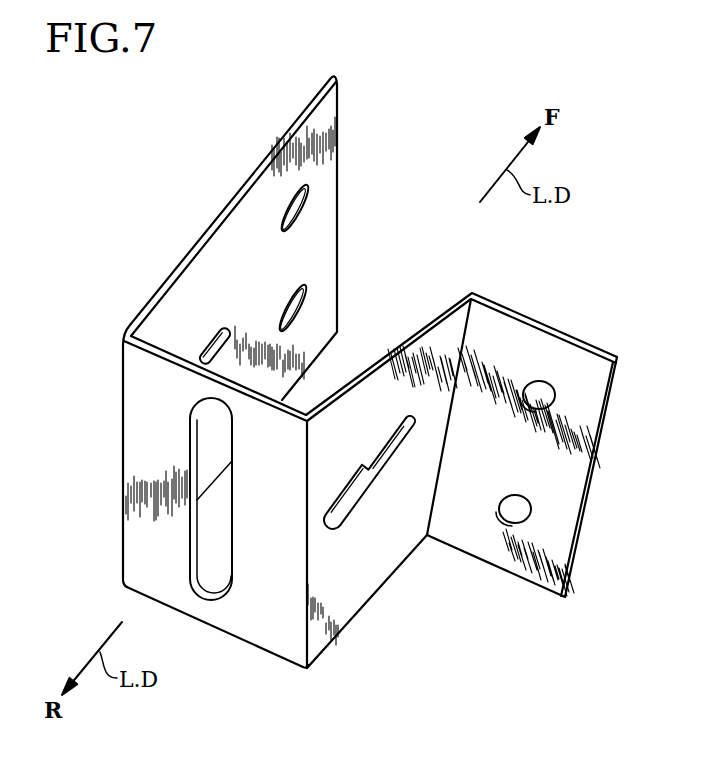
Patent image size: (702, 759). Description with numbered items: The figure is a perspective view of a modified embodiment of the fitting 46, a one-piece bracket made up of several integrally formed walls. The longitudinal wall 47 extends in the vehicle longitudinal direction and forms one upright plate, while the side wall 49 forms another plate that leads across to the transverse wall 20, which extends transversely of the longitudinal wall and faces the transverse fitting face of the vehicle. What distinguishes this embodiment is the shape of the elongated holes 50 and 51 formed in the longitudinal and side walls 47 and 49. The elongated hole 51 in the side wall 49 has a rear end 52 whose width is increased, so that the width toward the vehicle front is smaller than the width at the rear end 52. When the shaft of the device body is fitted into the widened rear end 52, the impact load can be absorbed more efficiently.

The fitting 46 is at (455, 165).
The longitudinal wall 47 is at (273, 148).
The side wall 49 is at (335, 640).
The elongated hole 50 is at (226, 334).
The elongated hole 51 is at (373, 473).
The rear end 52 is at (347, 520).
The transverse wall 20 is at (557, 465).